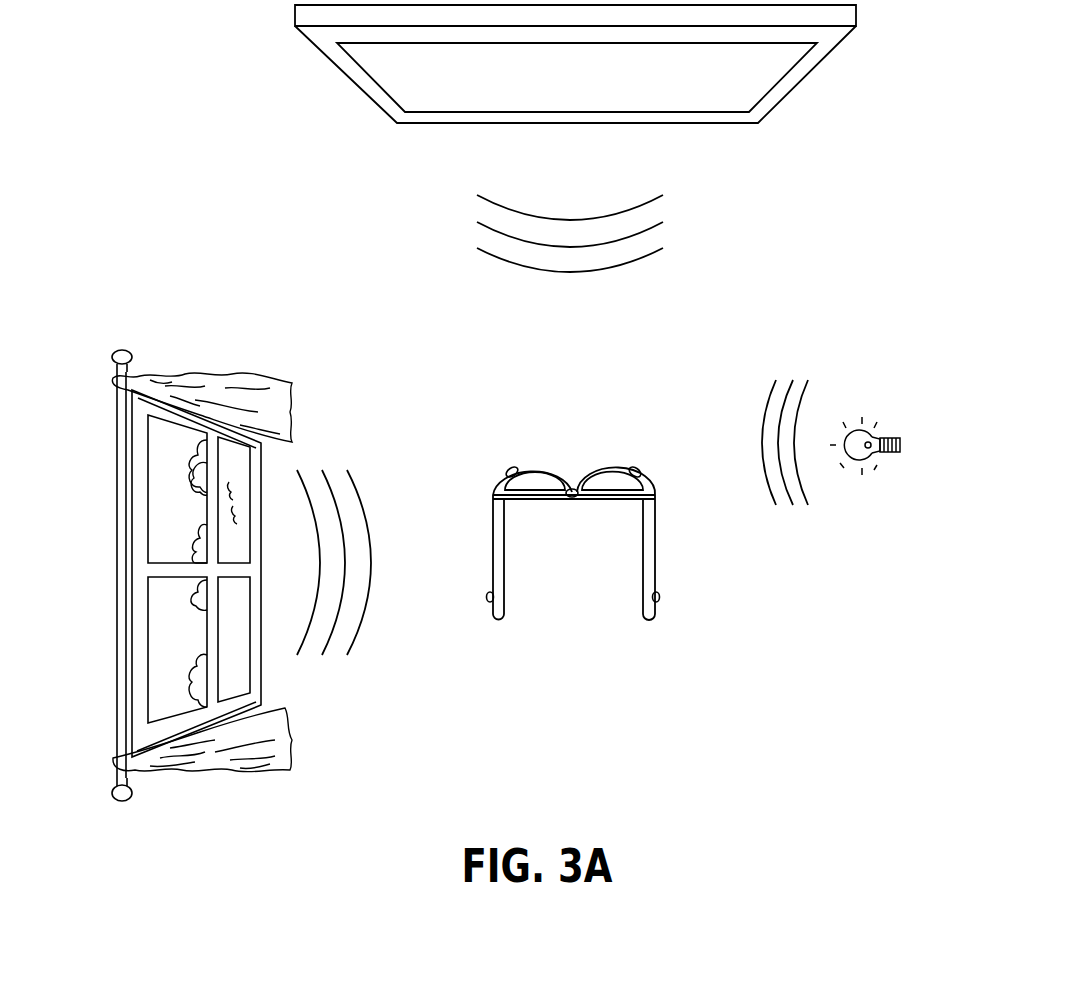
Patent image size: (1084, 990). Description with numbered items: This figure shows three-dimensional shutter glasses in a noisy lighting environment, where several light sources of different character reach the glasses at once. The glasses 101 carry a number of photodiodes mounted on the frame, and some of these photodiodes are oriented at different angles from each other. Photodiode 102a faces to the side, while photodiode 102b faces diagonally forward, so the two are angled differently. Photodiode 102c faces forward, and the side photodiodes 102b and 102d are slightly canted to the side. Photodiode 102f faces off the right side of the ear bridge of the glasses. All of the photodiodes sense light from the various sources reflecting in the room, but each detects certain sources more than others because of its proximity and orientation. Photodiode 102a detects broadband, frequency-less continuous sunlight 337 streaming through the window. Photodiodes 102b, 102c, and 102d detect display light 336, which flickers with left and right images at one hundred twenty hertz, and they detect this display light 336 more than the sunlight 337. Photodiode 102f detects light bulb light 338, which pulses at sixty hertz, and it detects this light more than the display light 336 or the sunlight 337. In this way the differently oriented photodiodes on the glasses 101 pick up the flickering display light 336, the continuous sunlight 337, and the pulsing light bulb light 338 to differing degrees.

The 3D glasses 101 is at (505, 607).
The photodiode 102a is at (487, 598).
The photodiode 102b is at (510, 469).
The photodiode 102c is at (572, 489).
The photodiode 102d is at (635, 469).
The photodiode 102f is at (660, 598).
The display light 336 is at (600, 270).
The sunlight 337 is at (370, 528).
The light bulb light 338 is at (763, 463).